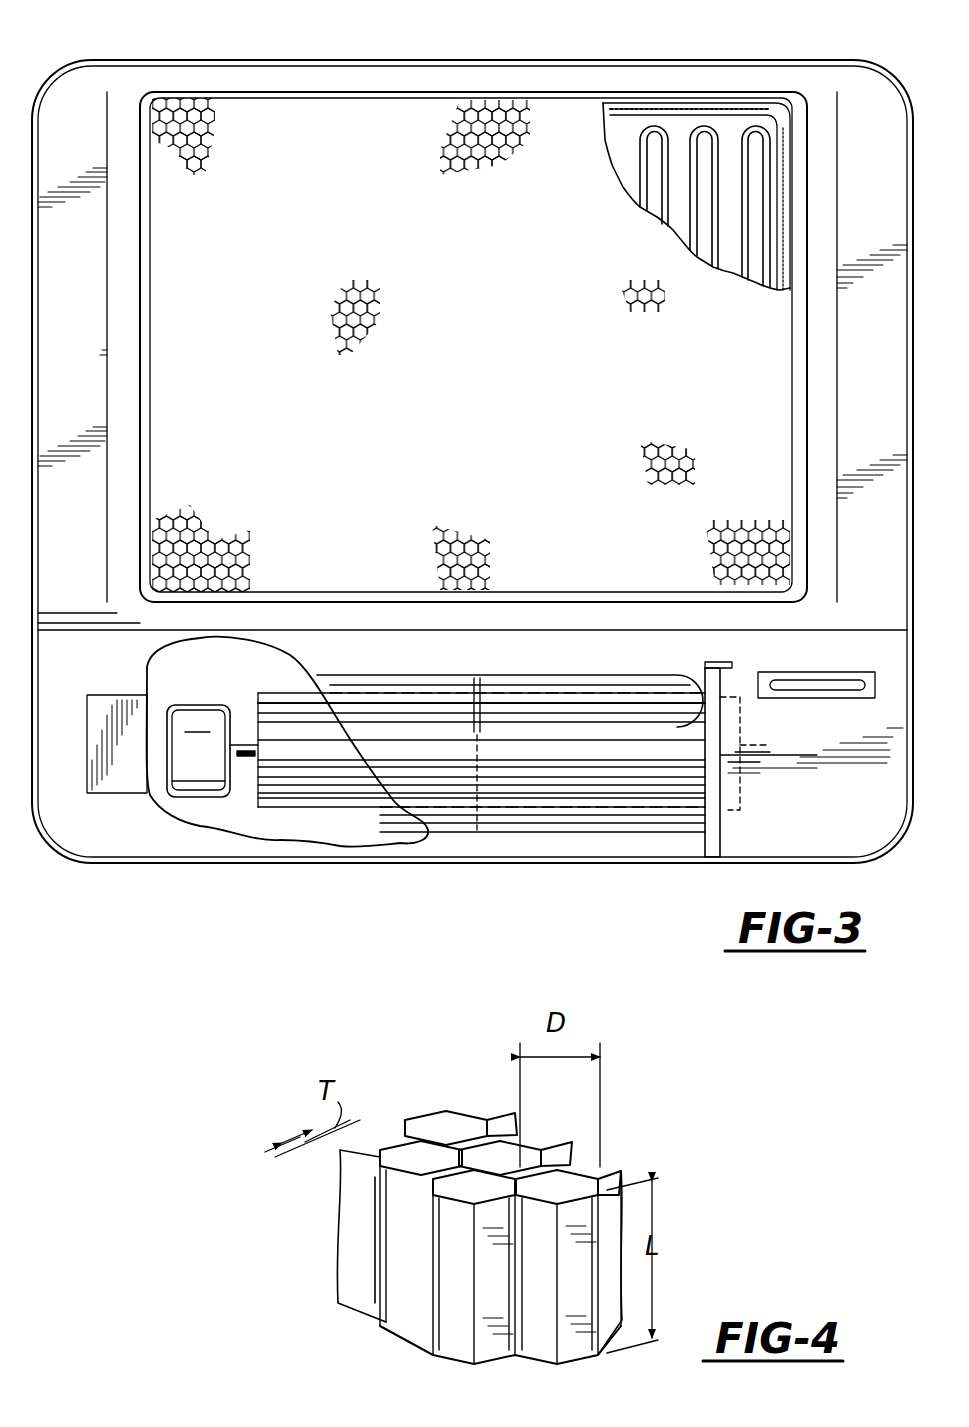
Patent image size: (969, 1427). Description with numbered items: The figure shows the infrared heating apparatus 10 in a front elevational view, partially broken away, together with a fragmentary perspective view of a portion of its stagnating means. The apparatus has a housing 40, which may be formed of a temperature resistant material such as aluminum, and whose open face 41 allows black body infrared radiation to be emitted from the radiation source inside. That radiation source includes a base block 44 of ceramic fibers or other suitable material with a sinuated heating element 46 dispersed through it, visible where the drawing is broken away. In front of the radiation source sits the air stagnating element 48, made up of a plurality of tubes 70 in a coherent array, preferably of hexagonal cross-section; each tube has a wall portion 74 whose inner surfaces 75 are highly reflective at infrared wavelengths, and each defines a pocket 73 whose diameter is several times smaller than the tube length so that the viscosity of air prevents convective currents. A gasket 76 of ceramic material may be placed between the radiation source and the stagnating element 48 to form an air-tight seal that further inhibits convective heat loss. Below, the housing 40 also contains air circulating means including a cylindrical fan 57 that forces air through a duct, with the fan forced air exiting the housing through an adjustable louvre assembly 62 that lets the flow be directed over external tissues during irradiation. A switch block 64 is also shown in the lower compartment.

In FIG. 3, the heating apparatus 10 is at (103, 876).
In FIG. 3, the housing 40 is at (396, 58).
In FIG. 3, the open face 41 is at (152, 512).
In FIG. 3, the base block 44 is at (733, 118).
In FIG. 3, the sinuated heating element 46 is at (762, 125).
In FIG. 3, the air stagnating element 48 is at (207, 108).
In FIG. 4, the air stagnating element 48 is at (430, 1112).
In FIG. 3, the cylindrical fan 57 is at (348, 788).
In FIG. 3, the adjustable louvre assembly 62 is at (661, 712).
In FIG. 3, the switch block 64 is at (200, 792).
In FIG. 4, the tubes 70 is at (408, 1115).
In FIG. 4, the pocket 73 is at (380, 1160).
In FIG. 4, the wall portion 74 is at (403, 1234).
In FIG. 4, the inner surfaces 75 is at (465, 1135).
In FIG. 3, the gasket 76 is at (637, 105).